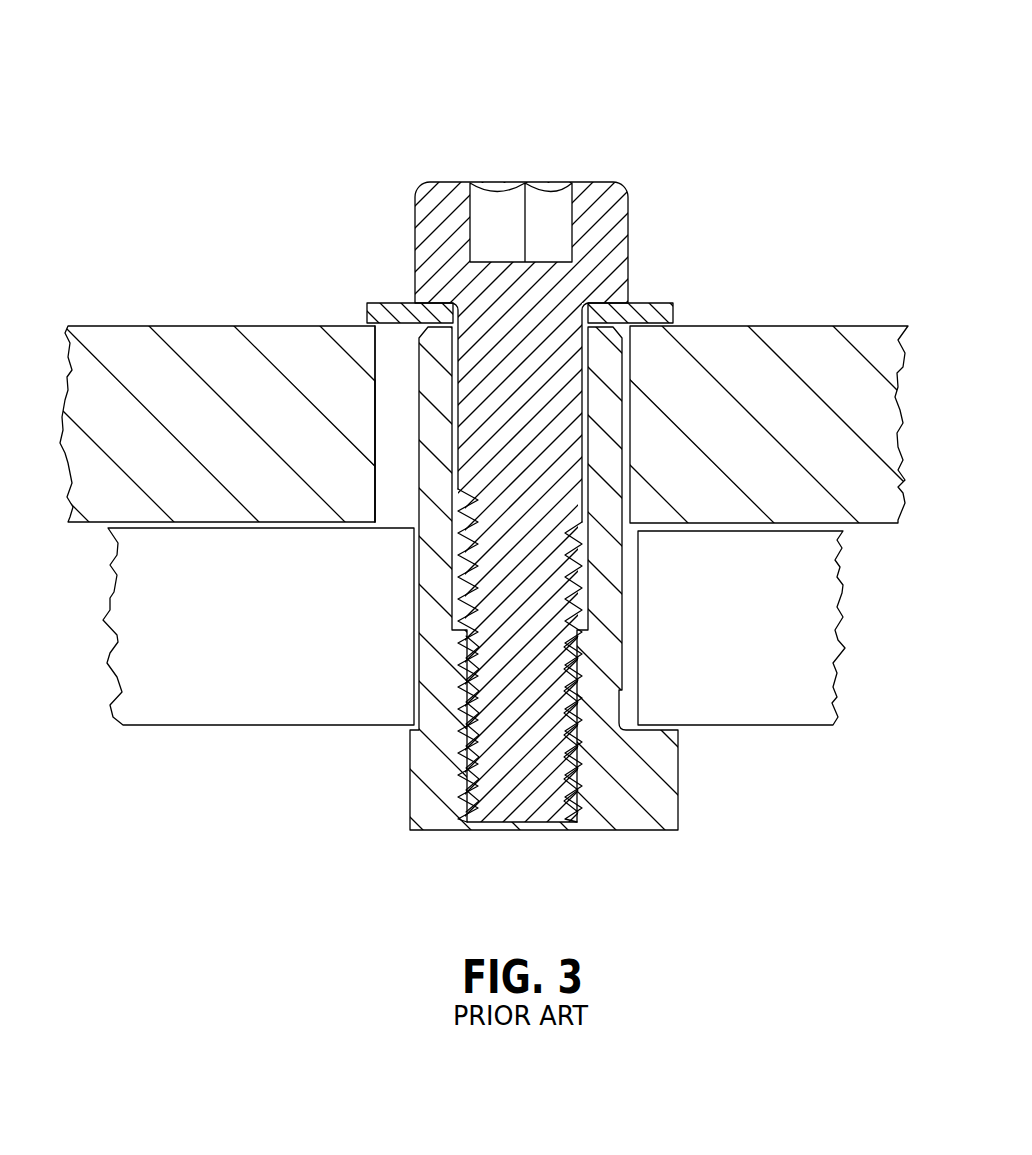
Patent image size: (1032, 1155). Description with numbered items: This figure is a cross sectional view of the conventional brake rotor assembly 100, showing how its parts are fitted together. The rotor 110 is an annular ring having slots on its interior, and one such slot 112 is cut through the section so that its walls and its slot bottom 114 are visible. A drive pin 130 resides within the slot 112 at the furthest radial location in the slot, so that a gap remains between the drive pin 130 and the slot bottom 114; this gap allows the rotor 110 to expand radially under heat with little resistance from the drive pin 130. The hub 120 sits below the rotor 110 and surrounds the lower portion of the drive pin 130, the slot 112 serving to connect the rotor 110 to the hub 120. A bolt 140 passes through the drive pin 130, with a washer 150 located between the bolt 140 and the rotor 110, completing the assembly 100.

The brake rotor assembly 100 is at (759, 87).
The rotor 110 is at (804, 326).
The slot 112 is at (383, 345).
The slot bottom 114 is at (383, 410).
The hub 120 is at (204, 712).
The drive pin 130 is at (650, 832).
The bolt 140 is at (603, 182).
The washer 150 is at (668, 303).